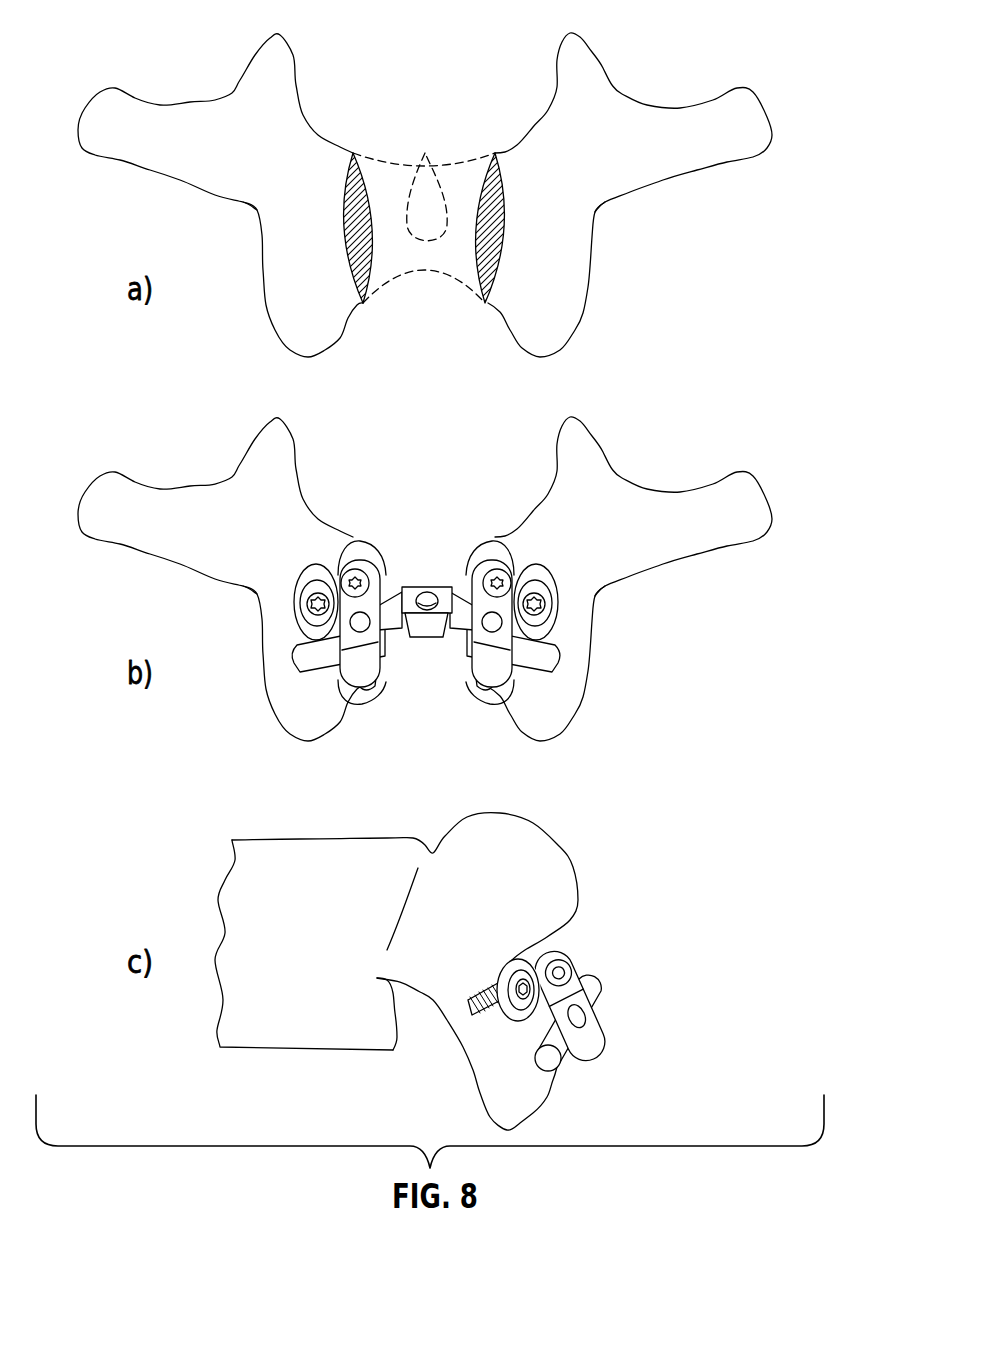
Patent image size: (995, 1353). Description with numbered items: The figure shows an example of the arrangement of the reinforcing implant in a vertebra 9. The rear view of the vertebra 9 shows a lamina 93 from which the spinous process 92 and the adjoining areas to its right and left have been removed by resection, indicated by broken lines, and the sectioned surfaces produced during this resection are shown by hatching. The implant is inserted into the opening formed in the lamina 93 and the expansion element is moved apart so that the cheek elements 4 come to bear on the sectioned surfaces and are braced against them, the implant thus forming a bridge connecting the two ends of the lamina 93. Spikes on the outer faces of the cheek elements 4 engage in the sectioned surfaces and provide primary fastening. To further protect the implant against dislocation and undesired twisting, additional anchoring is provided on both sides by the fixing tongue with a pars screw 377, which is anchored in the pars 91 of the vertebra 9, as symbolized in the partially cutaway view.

The vertebra 9 is at (640, 73).
The pars 91 is at (297, 238).
The spinous process 92 is at (427, 153).
The lamina 93 is at (388, 180).
The pars screw 377 is at (300, 607).
The cheek element 4 is at (368, 687).